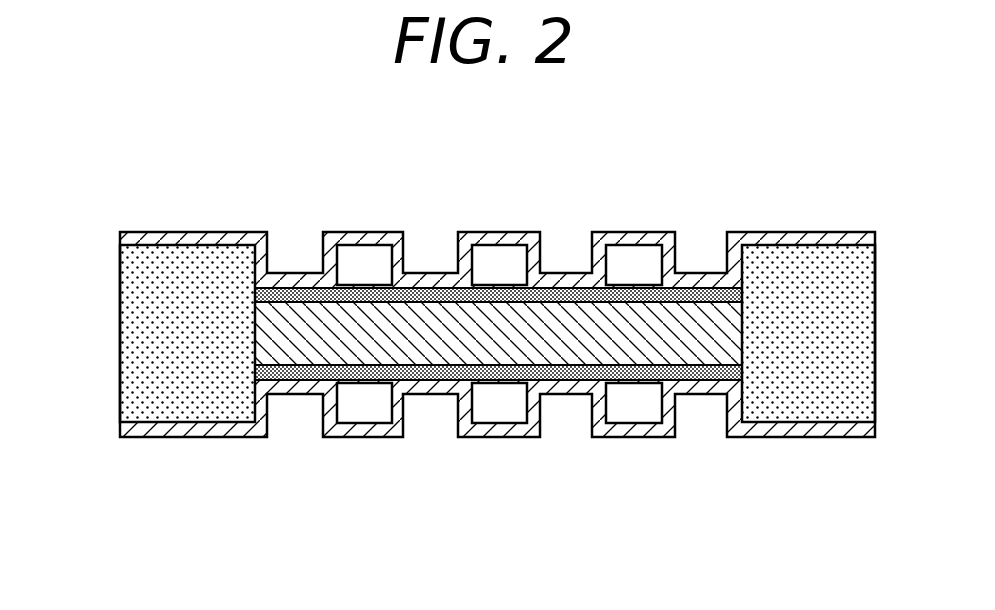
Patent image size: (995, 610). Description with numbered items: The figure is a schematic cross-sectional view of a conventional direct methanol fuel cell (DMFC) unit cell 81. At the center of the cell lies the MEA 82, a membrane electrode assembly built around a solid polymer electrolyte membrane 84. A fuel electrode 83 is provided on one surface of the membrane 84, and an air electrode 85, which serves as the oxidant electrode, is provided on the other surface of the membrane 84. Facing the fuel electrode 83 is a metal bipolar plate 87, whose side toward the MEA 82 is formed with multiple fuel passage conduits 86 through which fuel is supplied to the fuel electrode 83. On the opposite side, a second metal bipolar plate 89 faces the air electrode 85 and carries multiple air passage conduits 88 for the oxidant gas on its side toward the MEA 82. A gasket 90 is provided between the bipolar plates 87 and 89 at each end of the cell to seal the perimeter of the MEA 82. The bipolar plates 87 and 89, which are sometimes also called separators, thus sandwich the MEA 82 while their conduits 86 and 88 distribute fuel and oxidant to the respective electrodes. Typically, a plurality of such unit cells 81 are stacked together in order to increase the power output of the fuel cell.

The DMFC unit cell 81 is at (740, 180).
The MEA 82 is at (531, 338).
The fuel electrode 83 is at (300, 290).
The solid polymer electrolyte membrane 84 is at (357, 350).
The air electrode 85 is at (300, 372).
The fuel passage conduits 86 is at (500, 262).
The metal bipolar plate 87 is at (618, 232).
The air passage conduits 88 is at (495, 408).
The metal bipolar plate 89 is at (622, 437).
The gasket 90 is at (132, 330).